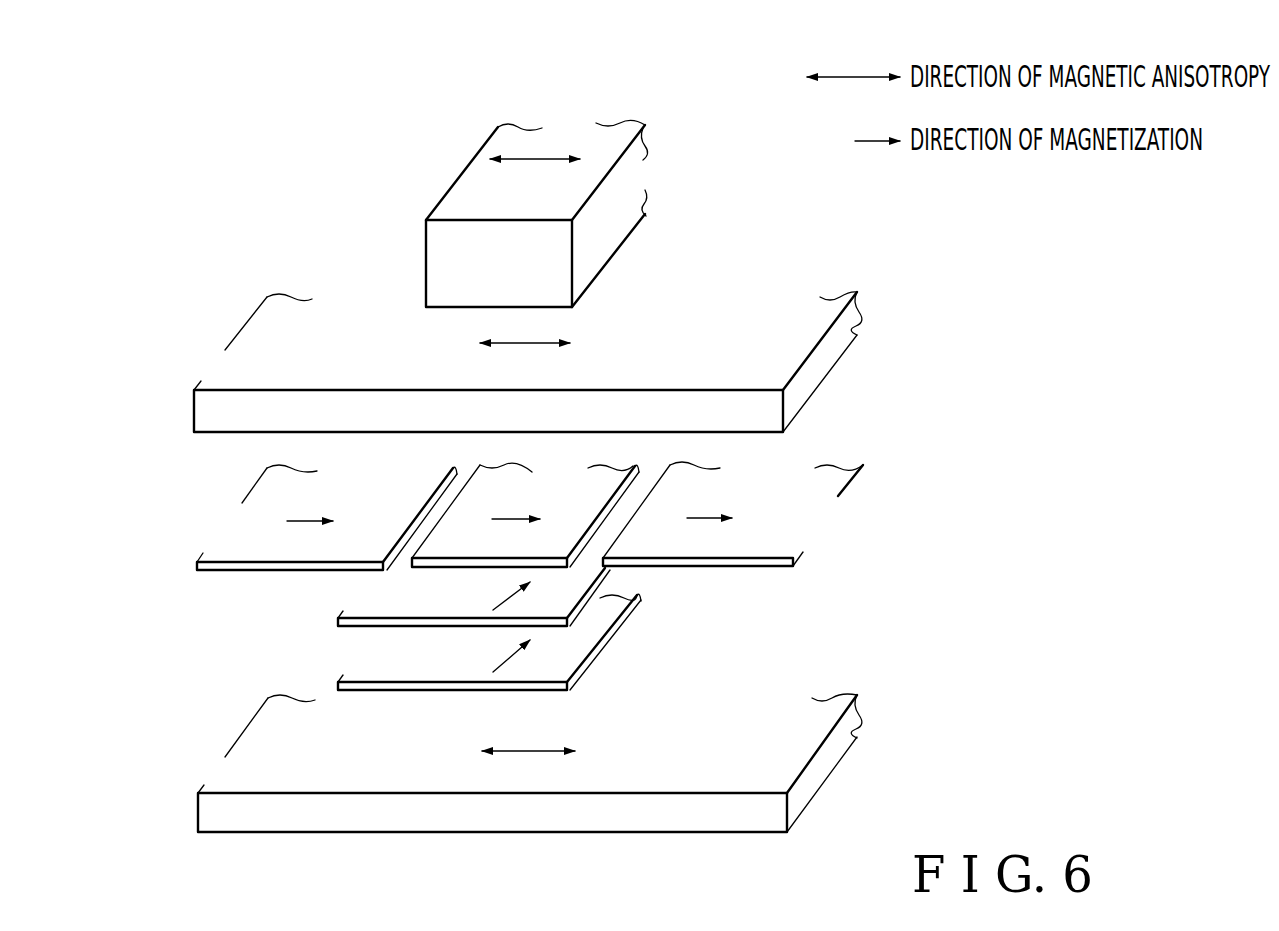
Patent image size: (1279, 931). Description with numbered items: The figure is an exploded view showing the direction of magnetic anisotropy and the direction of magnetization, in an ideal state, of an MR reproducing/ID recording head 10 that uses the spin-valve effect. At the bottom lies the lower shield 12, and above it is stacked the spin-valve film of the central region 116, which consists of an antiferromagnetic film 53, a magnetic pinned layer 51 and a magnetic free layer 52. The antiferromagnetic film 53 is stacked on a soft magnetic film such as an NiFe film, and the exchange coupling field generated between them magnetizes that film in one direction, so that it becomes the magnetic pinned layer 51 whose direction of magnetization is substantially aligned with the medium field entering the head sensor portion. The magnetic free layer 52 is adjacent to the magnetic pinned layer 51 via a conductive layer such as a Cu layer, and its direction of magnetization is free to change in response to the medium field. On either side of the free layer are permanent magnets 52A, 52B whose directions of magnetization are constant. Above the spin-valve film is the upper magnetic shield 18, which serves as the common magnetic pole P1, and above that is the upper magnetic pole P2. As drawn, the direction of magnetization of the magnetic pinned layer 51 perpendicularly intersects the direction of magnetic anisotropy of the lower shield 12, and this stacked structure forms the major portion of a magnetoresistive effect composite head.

The magnetic pole P2 is at (615, 145).
The magnetic shield 18 is at (522, 320).
The magnetic pole P1 is at (786, 328).
The lower shield 12 is at (812, 732).
The MR reproducing/ID recording head 10 is at (912, 438).
The permanent magnet 52A is at (312, 547).
The permanent magnet 52B is at (703, 538).
The central region 116 is at (712, 620).
The magnetic free layer 52 is at (557, 545).
The magnetic pinned layer 51 is at (573, 592).
The antiferromagnetic film 53 is at (570, 658).